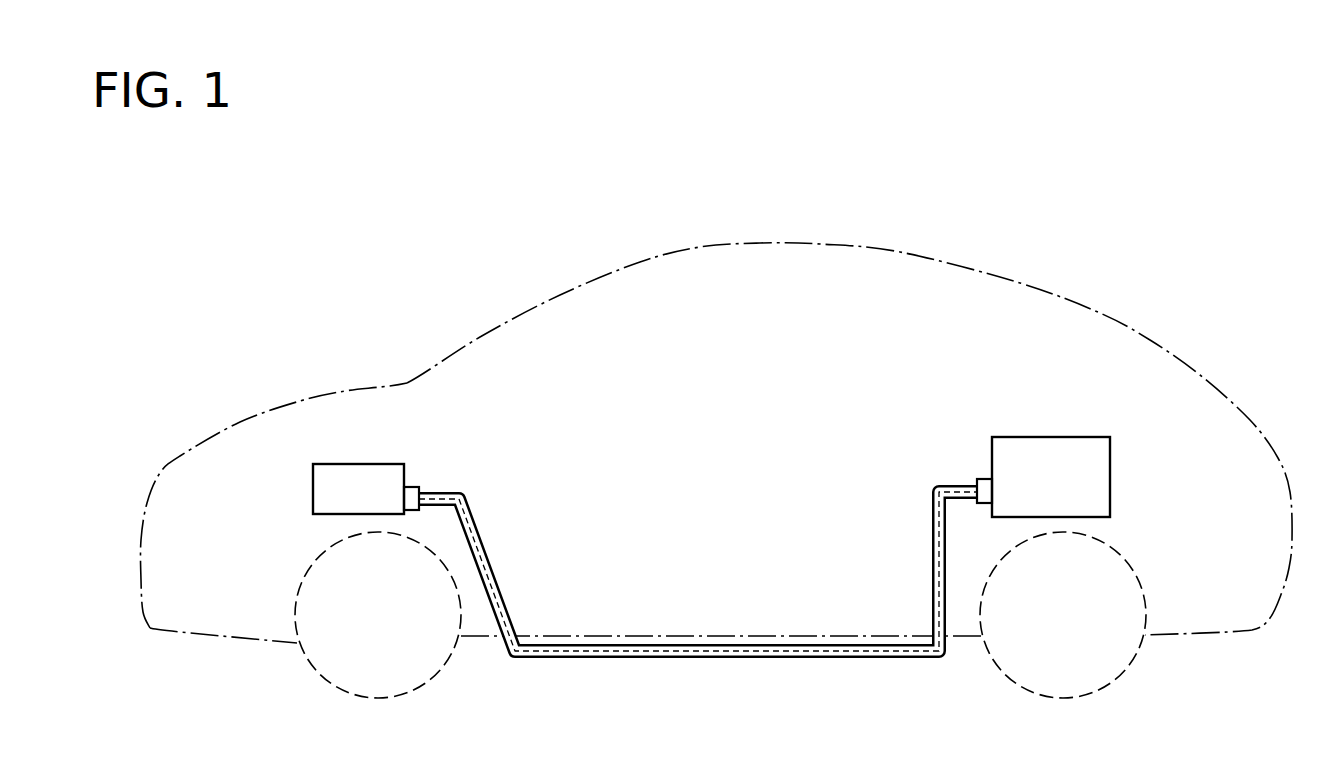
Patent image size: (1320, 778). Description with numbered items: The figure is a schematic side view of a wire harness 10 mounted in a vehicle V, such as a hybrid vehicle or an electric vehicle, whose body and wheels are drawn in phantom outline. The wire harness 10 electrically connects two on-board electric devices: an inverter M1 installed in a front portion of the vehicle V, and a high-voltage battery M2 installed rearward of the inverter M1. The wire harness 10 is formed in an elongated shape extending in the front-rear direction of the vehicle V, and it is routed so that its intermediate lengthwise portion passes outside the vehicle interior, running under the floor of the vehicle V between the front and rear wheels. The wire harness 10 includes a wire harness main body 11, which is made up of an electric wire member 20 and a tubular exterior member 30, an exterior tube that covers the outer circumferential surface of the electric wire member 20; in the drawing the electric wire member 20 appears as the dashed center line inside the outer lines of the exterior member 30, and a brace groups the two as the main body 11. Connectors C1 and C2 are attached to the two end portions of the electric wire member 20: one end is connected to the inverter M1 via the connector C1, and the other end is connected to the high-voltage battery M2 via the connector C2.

The vehicle V is at (1022, 285).
The wire harness 10 is at (698, 508).
The wire harness main body 11 is at (698, 571).
The electric wire member 20 is at (932, 537).
The tubular exterior member 30 is at (932, 571).
The inverter M1 is at (363, 464).
The high-voltage battery M2 is at (1079, 437).
The connector C1 is at (411, 487).
The connector C2 is at (981, 479).